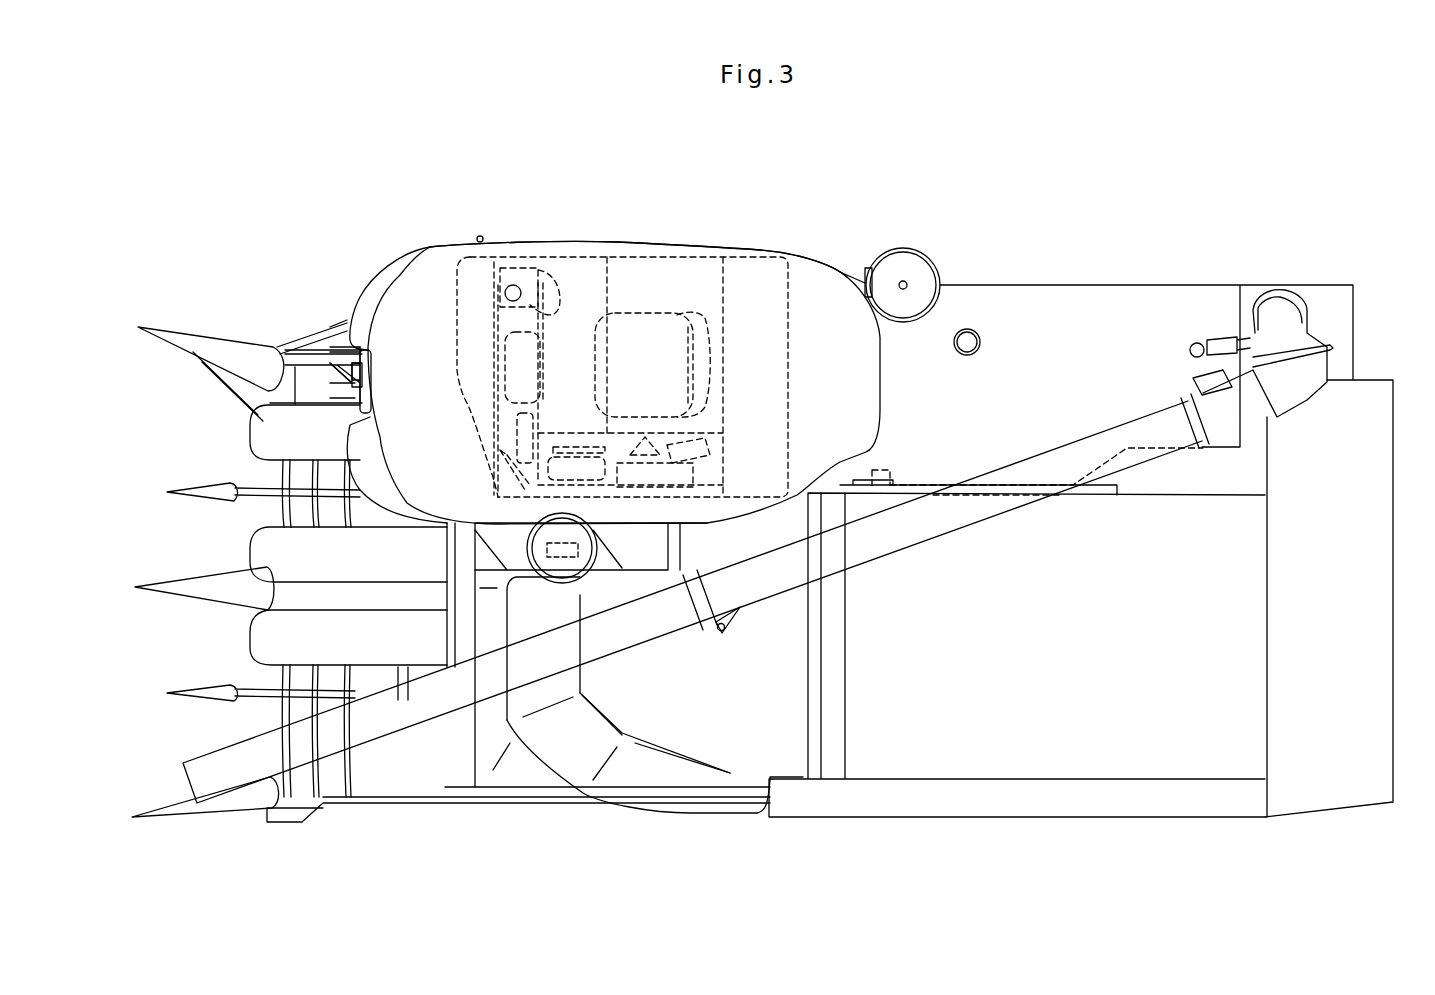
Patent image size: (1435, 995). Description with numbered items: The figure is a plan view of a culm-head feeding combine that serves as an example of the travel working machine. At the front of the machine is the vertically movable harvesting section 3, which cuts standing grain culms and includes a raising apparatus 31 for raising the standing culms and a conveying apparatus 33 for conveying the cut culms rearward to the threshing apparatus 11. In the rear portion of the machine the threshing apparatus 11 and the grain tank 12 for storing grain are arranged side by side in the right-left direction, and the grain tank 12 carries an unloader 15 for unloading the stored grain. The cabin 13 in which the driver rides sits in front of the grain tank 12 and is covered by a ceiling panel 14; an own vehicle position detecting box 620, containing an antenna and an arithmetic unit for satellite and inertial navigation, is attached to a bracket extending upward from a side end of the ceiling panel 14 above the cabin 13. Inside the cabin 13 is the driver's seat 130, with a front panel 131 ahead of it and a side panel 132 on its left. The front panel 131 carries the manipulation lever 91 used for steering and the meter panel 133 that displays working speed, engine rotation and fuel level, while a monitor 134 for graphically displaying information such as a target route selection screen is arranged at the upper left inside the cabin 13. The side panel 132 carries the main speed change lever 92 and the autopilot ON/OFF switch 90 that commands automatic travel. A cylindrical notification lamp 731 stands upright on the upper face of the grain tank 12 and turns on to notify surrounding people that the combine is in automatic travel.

The harvesting section 3 is at (231, 312).
The raising apparatus 31 is at (275, 548).
The conveying apparatus 33 is at (545, 780).
The cabin 13 is at (432, 234).
The ceiling panel 14 is at (710, 247).
The driver's seat 130 is at (646, 313).
The front panel 131 is at (545, 368).
The side panel 132 is at (683, 463).
The meter panel 133 is at (490, 378).
The monitor 134 is at (493, 470).
The manipulation lever 91 is at (517, 282).
The main speed change lever 92 is at (593, 447).
The autopilot ON/OFF switch 90 is at (657, 450).
The own vehicle position detecting box 620 is at (550, 580).
The grain tank 12 is at (1110, 297).
The notification lamp 731 is at (978, 333).
The unloader 15 is at (886, 552).
The threshing apparatus 11 is at (1053, 764).